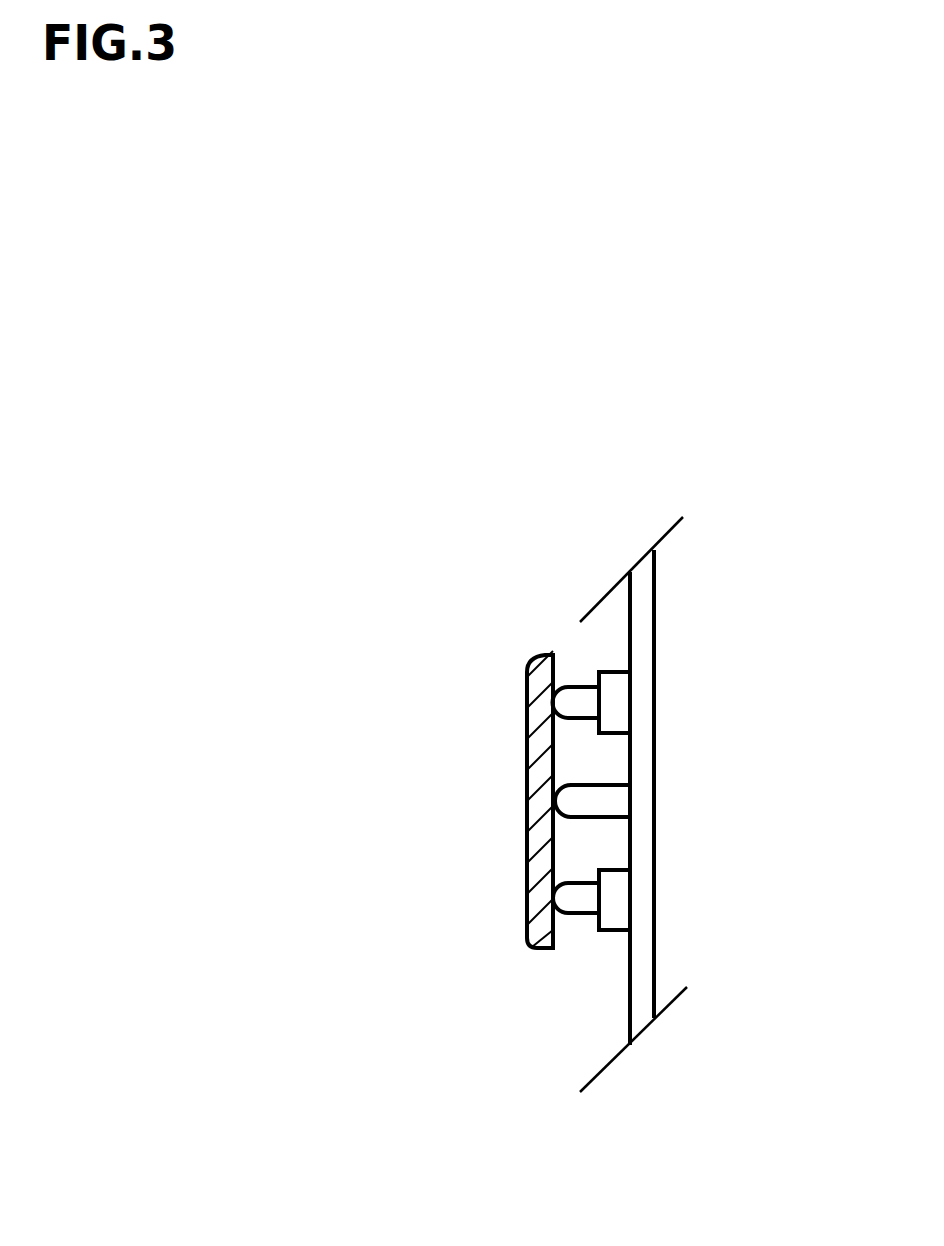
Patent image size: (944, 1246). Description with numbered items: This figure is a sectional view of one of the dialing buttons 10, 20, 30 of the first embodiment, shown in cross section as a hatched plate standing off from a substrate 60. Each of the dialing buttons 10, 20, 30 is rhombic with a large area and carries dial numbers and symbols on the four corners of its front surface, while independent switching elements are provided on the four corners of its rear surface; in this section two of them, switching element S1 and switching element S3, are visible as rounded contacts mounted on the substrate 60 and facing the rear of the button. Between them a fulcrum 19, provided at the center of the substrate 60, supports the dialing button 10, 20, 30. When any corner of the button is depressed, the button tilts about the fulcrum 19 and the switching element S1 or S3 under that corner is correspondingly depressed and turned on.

The dialing button 10 is at (380, 745).
The dialing button 20 is at (380, 745).
The dialing button 30 is at (527, 672).
The fulcrum 19 is at (593, 799).
The substrate 60 is at (642, 602).
The switching element S1 is at (618, 701).
The switching element S3 is at (620, 900).